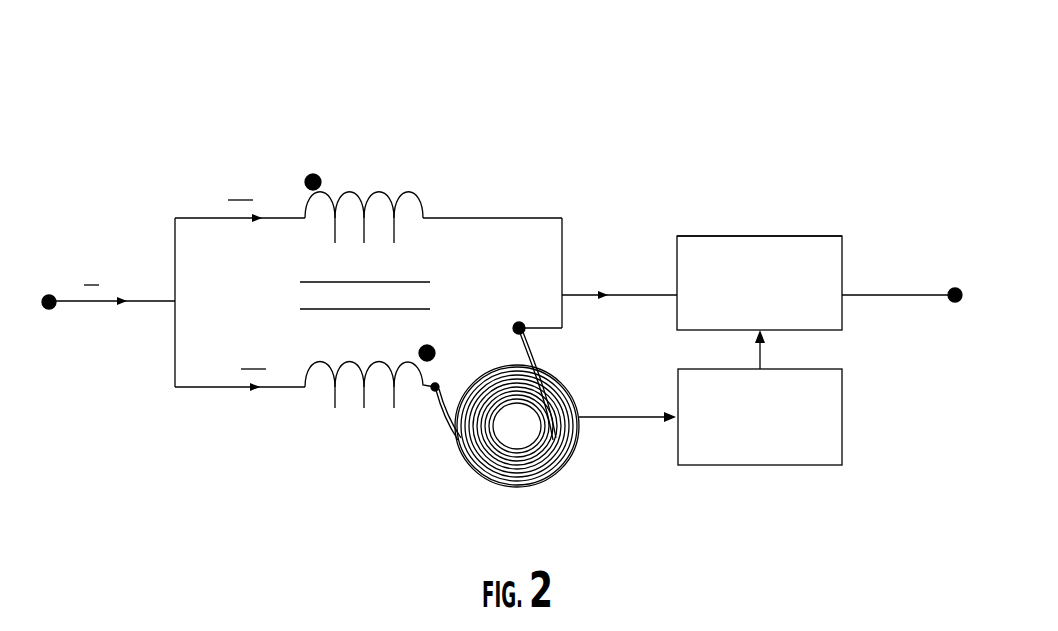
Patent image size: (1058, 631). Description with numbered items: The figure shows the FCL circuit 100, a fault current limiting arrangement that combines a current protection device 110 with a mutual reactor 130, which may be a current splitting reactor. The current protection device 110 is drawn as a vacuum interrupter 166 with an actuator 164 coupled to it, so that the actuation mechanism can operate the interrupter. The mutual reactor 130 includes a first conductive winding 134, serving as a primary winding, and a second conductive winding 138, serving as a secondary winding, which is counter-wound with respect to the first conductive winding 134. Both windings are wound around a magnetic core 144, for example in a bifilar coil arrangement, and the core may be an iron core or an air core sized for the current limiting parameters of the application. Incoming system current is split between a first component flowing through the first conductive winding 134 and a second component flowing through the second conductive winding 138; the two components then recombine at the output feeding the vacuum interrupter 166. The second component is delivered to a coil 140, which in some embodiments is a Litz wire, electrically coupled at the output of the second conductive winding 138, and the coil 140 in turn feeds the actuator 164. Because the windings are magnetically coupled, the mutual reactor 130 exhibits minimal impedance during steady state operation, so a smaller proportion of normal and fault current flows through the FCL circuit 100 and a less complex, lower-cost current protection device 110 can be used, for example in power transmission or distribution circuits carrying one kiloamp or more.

The FCL circuit 100 is at (396, 82).
The current protection device 110 is at (692, 222).
The mutual reactor 130 is at (434, 200).
The first conductive winding 134 is at (383, 192).
The second conductive winding 138 is at (333, 402).
The coil 140 is at (498, 483).
The magnetic core 144 is at (309, 318).
The actuator 164 is at (727, 465).
The interrupter 166 is at (775, 236).